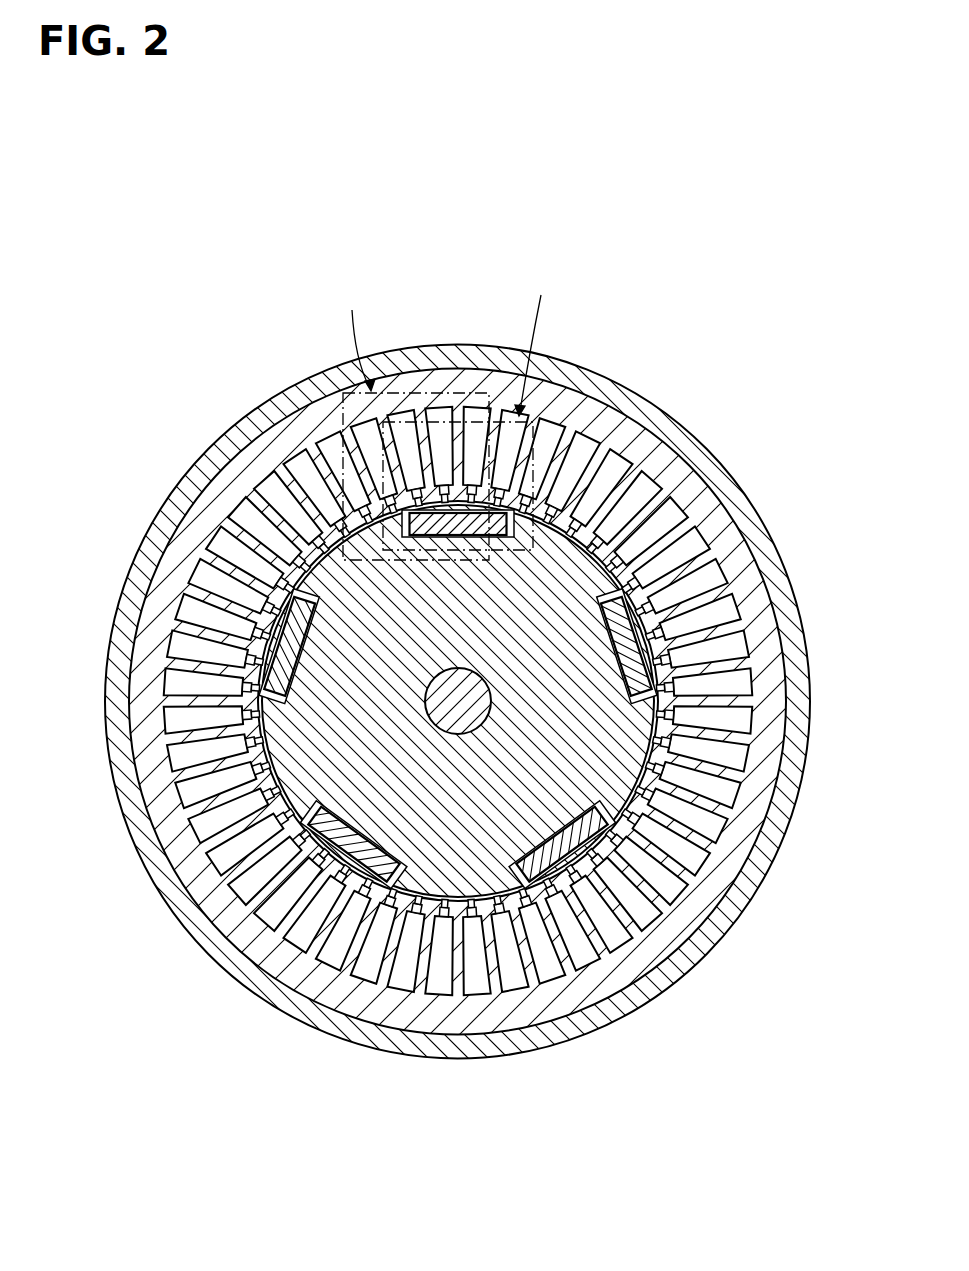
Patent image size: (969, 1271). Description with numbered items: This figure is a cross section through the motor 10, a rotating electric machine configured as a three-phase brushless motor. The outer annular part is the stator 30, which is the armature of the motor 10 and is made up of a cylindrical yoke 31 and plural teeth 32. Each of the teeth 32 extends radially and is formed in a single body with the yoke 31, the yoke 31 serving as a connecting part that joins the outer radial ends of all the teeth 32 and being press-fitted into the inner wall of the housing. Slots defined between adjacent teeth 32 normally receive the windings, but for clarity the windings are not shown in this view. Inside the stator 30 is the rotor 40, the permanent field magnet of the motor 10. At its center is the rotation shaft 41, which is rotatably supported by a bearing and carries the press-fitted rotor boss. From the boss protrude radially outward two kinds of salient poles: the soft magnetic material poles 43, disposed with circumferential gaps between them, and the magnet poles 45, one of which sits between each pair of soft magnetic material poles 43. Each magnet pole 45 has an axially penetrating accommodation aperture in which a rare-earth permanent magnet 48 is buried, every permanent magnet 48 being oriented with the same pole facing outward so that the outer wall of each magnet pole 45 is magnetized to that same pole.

The motor 10 is at (232, 347).
The stator 30 is at (730, 500).
The yoke 31 is at (737, 540).
The teeth 32 is at (658, 510).
The rotor 40 is at (262, 720).
The rotation shaft 41 is at (478, 710).
The soft magnetic material poles 43 is at (641, 478).
The magnet poles 45 is at (451, 508).
The permanent magnets 48 is at (462, 497).